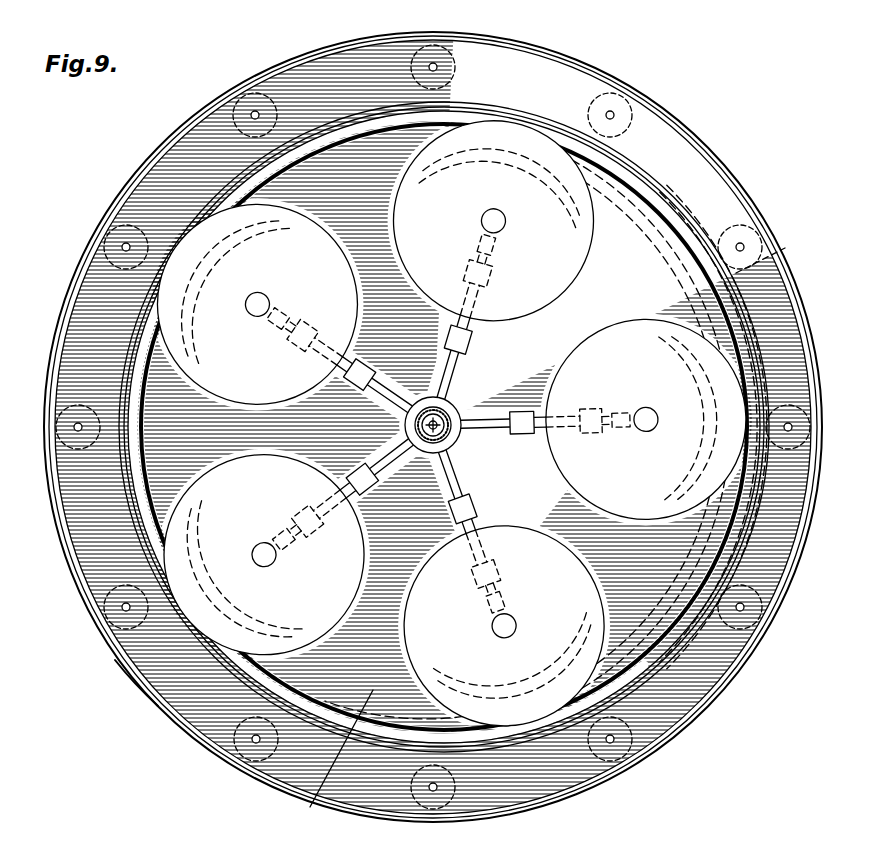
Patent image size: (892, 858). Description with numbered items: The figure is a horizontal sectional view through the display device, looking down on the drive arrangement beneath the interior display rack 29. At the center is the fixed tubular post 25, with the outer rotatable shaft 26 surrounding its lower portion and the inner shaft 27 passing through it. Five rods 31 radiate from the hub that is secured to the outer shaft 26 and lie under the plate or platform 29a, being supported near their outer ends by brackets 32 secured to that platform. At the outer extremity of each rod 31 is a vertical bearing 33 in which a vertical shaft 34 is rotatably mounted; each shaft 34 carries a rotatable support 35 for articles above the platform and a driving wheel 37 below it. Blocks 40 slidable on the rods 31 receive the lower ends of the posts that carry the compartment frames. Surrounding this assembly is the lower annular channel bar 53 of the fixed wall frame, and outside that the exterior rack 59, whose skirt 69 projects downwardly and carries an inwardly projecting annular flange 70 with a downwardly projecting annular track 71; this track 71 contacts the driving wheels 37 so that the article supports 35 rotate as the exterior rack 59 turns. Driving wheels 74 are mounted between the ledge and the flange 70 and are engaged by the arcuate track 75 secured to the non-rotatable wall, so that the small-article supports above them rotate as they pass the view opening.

The tubular post 25 is at (441, 413).
The outer rotatable shaft 26 is at (455, 437).
The inner shaft 27 is at (426, 448).
The interior display rack 29 is at (389, 720).
The plate or platform 29a is at (330, 764).
The rods 31 is at (487, 423).
The brackets 32 is at (472, 262).
The vertical bearings 33 is at (498, 247).
The vertical shafts 34 is at (658, 418).
The rotatable supports 35 is at (410, 425).
The driving wheels 37 is at (433, 424).
The blocks 40 is at (522, 437).
The lower annular channel bar 53 is at (640, 188).
The exterior rack 59 is at (183, 706).
The skirt 69 is at (538, 50).
The annular flange 70 is at (557, 78).
The annular track 71 is at (498, 112).
The driving wheels 74 is at (452, 66).
The arcuate track 75 is at (779, 262).